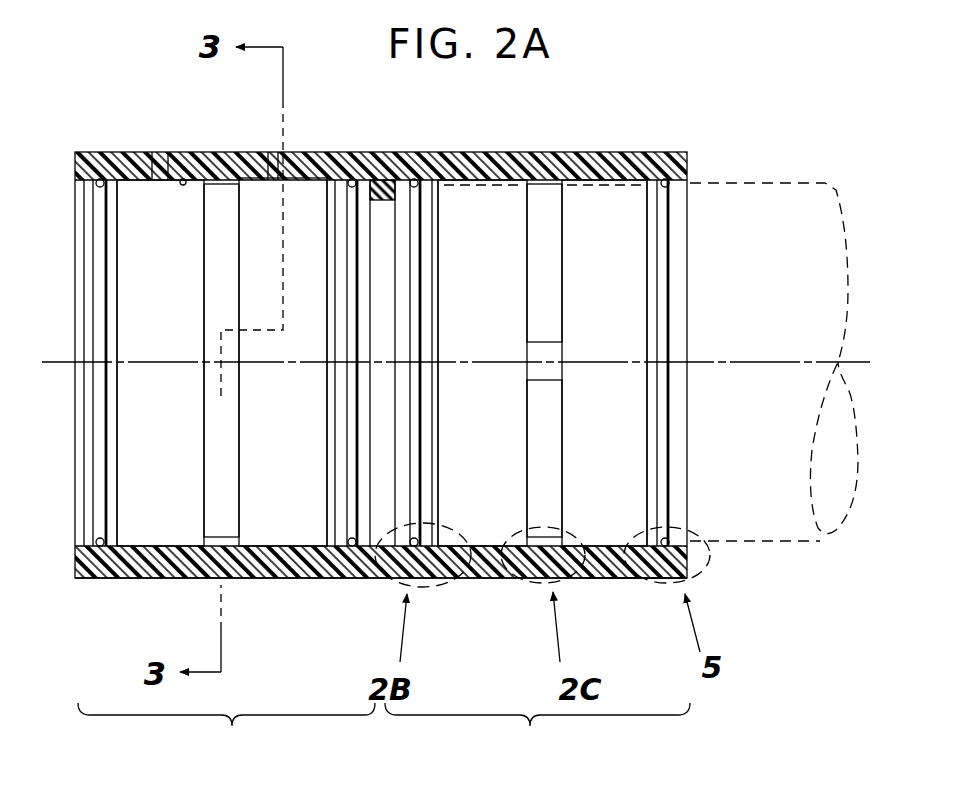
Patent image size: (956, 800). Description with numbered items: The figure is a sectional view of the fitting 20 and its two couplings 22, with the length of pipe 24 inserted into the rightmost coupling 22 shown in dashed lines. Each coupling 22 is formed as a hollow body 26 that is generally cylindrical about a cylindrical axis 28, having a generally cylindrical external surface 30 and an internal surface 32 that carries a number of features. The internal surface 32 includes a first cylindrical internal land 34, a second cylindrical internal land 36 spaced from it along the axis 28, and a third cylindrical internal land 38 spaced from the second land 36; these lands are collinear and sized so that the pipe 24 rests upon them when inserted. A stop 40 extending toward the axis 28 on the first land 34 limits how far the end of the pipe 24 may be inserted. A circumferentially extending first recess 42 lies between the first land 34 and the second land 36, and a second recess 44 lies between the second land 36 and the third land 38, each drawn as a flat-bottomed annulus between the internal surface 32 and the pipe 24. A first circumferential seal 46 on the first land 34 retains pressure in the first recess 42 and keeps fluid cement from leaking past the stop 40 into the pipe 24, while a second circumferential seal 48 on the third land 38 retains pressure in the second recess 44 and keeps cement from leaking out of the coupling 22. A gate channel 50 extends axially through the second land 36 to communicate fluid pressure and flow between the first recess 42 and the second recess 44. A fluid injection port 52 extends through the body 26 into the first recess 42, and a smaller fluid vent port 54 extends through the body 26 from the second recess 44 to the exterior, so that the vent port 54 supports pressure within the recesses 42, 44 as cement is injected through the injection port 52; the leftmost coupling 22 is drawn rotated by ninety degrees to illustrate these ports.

The fitting 20 is at (586, 582).
The coupling 22 is at (384, 732).
The pipe 24 is at (822, 541).
The hollow body 26 is at (608, 579).
The cylindrical axis 28 is at (58, 362).
The external surface 30 is at (318, 578).
The internal surface 32 is at (490, 548).
The first cylindrical internal land 34 is at (327, 190).
The second cylindrical internal land 36 is at (212, 195).
The third cylindrical internal land 38 is at (98, 188).
The stop 40 is at (381, 168).
The first recess 42 is at (187, 174).
The second recess 44 is at (600, 192).
The first circumferential seal 46 is at (350, 177).
The second circumferential seal 48 is at (100, 178).
The gate channel 50 is at (545, 368).
The fluid injection port 52 is at (272, 154).
The fluid vent port 54 is at (160, 154).